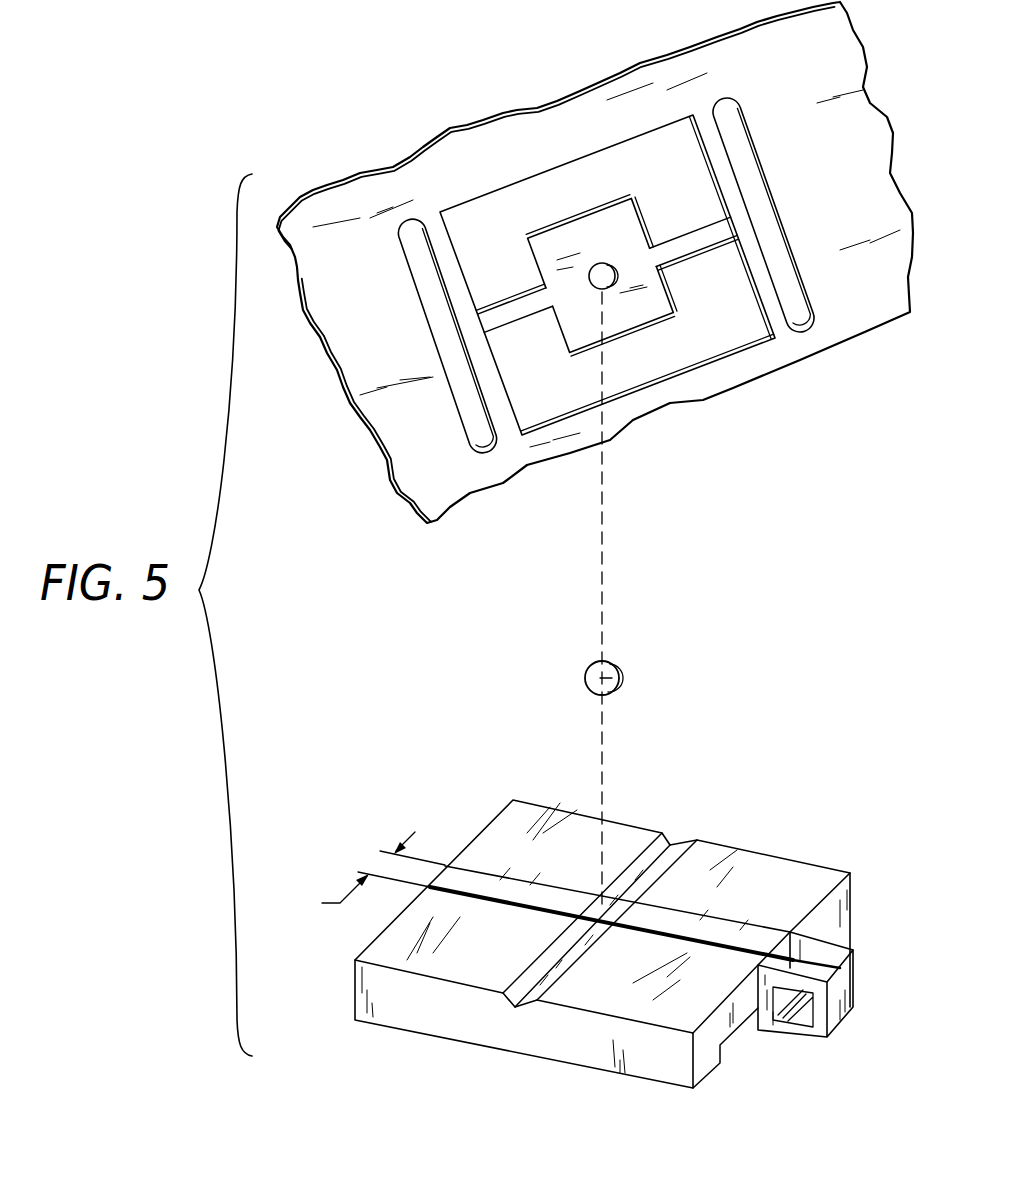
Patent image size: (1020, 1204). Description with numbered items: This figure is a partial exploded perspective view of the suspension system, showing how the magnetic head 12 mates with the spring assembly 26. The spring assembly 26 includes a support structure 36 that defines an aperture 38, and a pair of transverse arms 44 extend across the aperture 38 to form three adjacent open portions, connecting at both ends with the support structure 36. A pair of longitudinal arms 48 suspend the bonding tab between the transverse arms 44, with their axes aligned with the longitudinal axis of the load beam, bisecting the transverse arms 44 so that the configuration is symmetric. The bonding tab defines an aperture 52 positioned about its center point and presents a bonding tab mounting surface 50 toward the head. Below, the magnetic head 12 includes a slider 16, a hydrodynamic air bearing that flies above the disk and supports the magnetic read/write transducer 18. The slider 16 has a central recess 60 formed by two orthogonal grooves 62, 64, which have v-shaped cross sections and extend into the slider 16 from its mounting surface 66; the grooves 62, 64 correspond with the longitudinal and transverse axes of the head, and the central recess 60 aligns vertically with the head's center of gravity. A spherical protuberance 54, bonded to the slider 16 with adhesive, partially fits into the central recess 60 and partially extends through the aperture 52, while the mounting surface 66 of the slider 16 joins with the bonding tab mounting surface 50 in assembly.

The magnetic head 12 is at (748, 813).
The slider 16 is at (781, 866).
The magnetic read/write transducer 18 is at (840, 999).
The spring assembly 26 is at (655, 307).
The support structure 36 is at (891, 303).
The aperture 38 is at (713, 370).
The transverse arms 44 is at (450, 293).
The longitudinal arms 48 is at (517, 310).
The bonding tab mounting surface 50 is at (650, 247).
The aperture 52 is at (612, 262).
The protuberance 54 is at (622, 674).
The central recess 60 is at (607, 900).
The groove 62 is at (500, 888).
The groove 64 is at (657, 842).
The mounting surface 66 is at (513, 840).